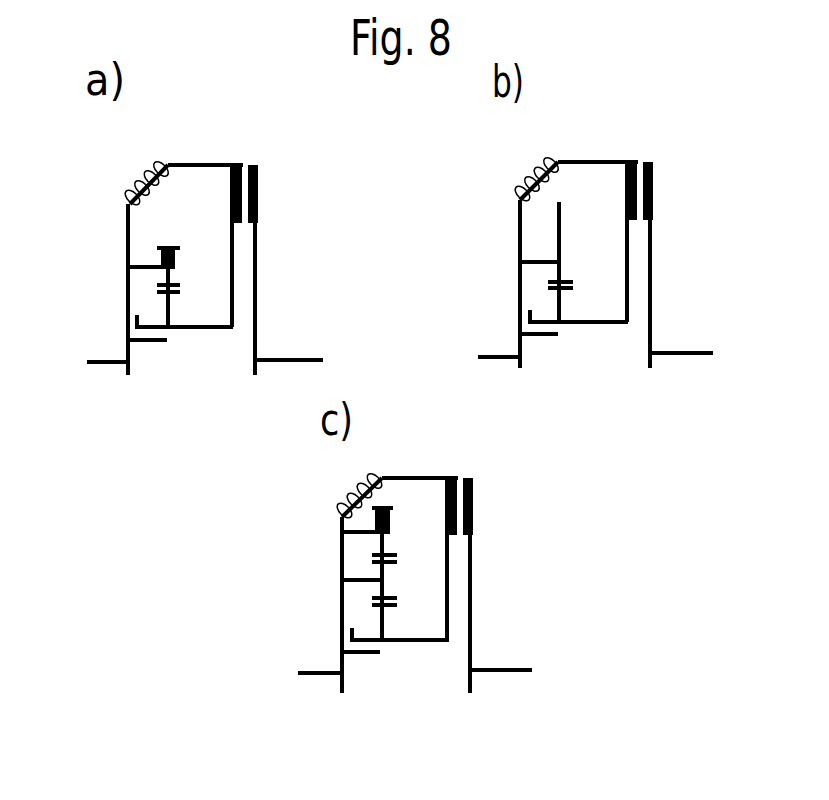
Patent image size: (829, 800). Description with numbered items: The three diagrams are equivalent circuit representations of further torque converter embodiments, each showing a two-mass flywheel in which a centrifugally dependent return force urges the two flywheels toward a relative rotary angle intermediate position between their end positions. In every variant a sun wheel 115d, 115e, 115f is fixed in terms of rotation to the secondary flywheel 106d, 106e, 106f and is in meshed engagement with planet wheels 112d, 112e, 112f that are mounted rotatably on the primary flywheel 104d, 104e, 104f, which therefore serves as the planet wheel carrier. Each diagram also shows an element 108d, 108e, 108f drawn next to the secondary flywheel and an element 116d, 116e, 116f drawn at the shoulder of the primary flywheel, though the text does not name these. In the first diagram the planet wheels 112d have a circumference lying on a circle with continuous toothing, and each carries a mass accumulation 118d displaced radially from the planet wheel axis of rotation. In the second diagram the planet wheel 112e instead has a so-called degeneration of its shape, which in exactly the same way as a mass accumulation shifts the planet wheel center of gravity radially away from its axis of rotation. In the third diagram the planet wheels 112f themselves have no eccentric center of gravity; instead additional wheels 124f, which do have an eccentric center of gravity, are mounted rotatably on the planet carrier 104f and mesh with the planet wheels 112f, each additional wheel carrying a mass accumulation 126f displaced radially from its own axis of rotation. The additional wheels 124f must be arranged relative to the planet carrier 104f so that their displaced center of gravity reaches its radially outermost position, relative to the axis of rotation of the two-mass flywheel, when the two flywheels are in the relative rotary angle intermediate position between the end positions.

In FIG. 8a, the primary flywheel 104d is at (128, 258).
In FIG. 8a, the secondary flywheel 106d is at (233, 292).
In FIG. 8a, the magnet 108d is at (258, 190).
In FIG. 8a, the planet wheel 112d is at (165, 272).
In FIG. 8a, the sun wheel 115d is at (172, 307).
In FIG. 8a, the spring 116d is at (132, 180).
In FIG. 8a, the mass accumulation 118d is at (177, 263).
In FIG. 8b, the primary flywheel 104e is at (517, 252).
In FIG. 8b, the secondary flywheel 106e is at (628, 285).
In FIG. 8b, the magnet 108e is at (653, 183).
In FIG. 8b, the planet wheel 112e is at (563, 222).
In FIG. 8b, the sun wheel 115e is at (560, 303).
In FIG. 8b, the spring 116e is at (523, 172).
In FIG. 8c, the primary flywheel 104f is at (340, 570).
In FIG. 8c, the secondary flywheel 106f is at (450, 603).
In FIG. 8c, the magnet 108f is at (473, 502).
In FIG. 8c, the planet wheel 112f is at (380, 588).
In FIG. 8c, the sun wheel 115f is at (383, 623).
In FIG. 8c, the spring 116f is at (350, 493).
In FIG. 8c, the additional wheel 124f is at (388, 540).
In FIG. 8c, the mass accumulation 126f is at (393, 523).